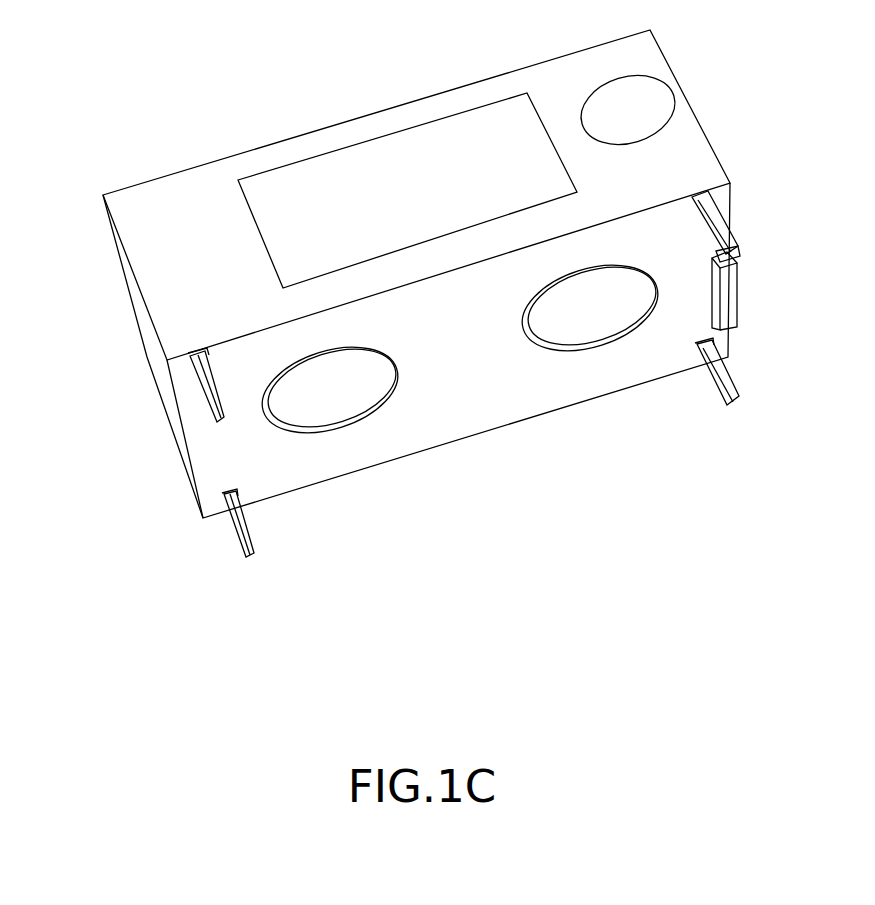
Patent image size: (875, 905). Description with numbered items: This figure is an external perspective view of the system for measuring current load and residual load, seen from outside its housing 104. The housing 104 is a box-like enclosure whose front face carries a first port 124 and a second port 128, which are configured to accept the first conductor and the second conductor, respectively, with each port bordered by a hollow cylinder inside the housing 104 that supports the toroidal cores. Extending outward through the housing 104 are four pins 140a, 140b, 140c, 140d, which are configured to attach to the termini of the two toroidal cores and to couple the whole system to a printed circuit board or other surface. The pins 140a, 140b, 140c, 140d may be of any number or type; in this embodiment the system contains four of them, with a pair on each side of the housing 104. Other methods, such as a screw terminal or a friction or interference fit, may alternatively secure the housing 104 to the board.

The housing 104 is at (160, 197).
The first port 124 is at (322, 388).
The second port 128 is at (587, 307).
The pin 140a is at (220, 420).
The pin 140b is at (253, 553).
The pin 140c is at (737, 250).
The pin 140d is at (737, 400).